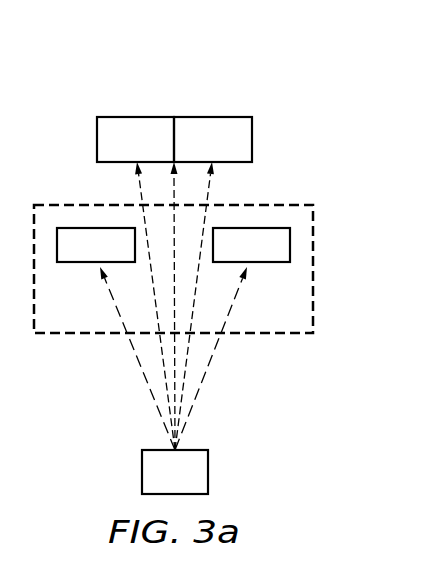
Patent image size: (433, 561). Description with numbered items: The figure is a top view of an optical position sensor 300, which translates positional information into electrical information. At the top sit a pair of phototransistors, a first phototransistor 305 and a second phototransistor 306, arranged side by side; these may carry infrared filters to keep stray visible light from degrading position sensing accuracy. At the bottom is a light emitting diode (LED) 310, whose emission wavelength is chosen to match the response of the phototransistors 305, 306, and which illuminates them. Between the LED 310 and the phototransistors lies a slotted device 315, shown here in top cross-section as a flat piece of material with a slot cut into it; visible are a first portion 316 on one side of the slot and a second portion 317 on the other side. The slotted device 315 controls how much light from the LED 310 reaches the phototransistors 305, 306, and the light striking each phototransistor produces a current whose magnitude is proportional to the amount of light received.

The optical position sensor 300 is at (131, 70).
The phototransistor PT1 305 is at (97, 139).
The phototransistor PT2 306 is at (252, 139).
The light emitting diode (LED) 310 is at (142, 472).
The slotted device 315 is at (173, 303).
The first portion 316 is at (87, 262).
The second portion 317 is at (262, 262).